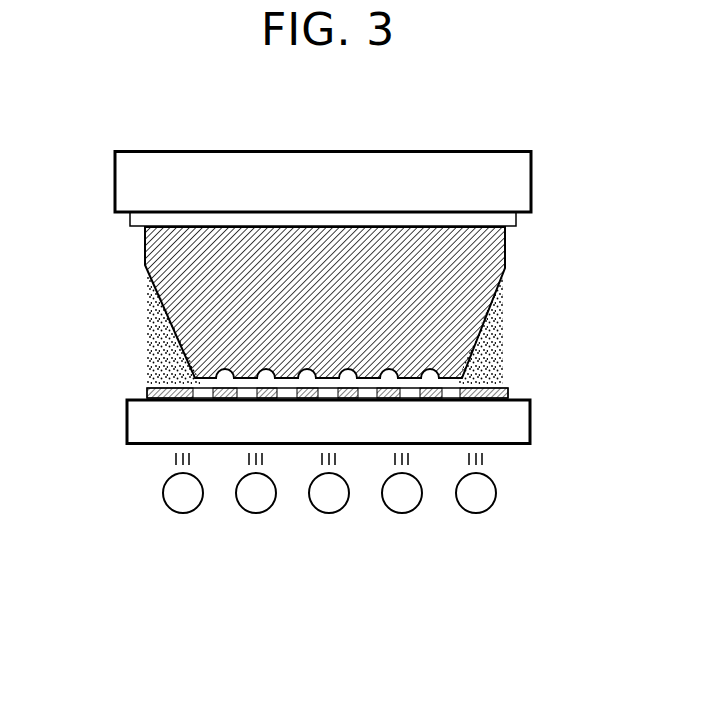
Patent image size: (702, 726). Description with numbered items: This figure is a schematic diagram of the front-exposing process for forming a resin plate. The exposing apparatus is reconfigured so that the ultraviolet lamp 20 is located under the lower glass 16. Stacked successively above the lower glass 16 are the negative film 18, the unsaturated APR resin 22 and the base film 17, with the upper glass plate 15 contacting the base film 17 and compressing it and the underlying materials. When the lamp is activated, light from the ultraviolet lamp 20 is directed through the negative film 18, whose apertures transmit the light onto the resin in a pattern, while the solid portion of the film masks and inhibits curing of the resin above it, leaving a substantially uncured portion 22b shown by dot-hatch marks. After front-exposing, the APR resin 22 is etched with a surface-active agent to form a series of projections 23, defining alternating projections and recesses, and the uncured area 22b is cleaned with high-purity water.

The upper glass plate 15 is at (531, 181).
The base film 17 is at (516, 218).
The unsaturated APR resin 22 is at (492, 253).
The substantially uncured portion of the APR resin 22b is at (495, 318).
The negative film 18 is at (508, 391).
The lower glass 16 is at (530, 425).
The projections 23 is at (366, 380).
The ultraviolet lamp 20 is at (496, 491).